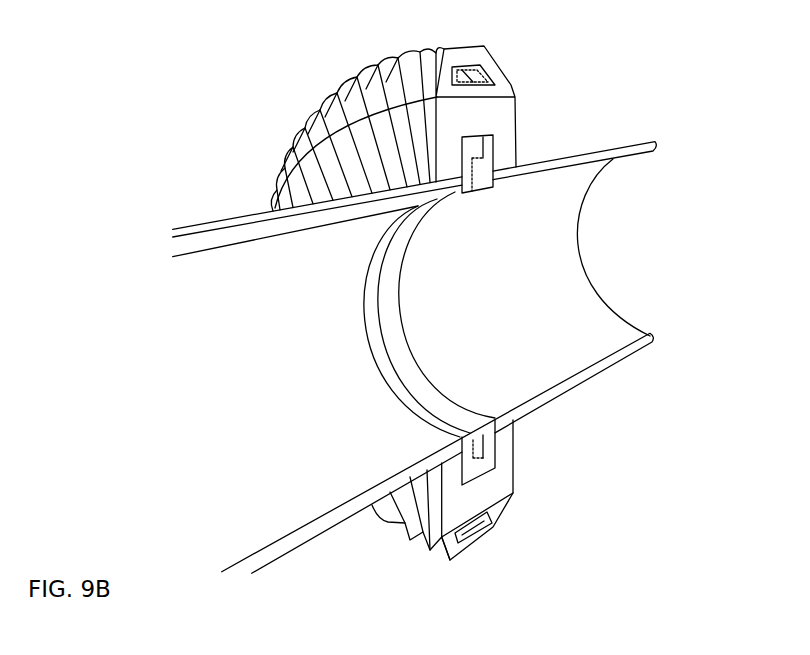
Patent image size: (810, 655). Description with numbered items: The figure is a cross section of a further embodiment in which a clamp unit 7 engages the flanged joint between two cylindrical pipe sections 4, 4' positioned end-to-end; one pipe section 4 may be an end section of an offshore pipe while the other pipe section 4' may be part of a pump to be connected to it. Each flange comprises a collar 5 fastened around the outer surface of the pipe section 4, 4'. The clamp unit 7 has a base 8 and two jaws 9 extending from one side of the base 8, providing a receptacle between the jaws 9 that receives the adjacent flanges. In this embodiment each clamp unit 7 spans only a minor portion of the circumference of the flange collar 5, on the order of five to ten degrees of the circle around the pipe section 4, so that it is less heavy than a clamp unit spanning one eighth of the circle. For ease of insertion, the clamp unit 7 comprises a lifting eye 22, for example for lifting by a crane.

The pipe section 4 is at (415, 358).
The pipe section 4' is at (507, 298).
The collar 5 is at (482, 156).
The clamp unit 7 is at (467, 105).
The base 8 is at (480, 108).
The jaw 9 is at (487, 111).
The lifting eye 22 is at (481, 66).